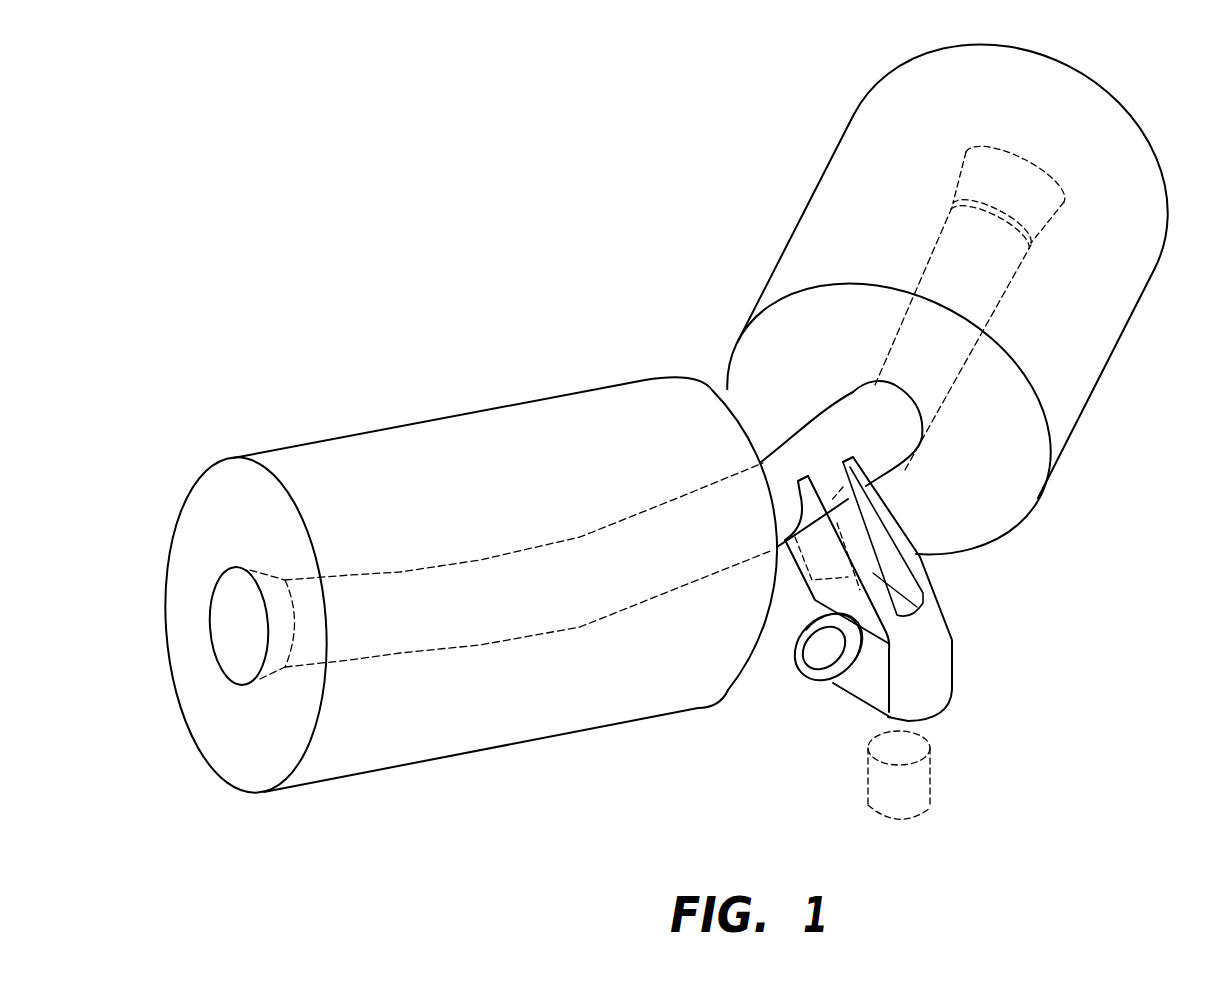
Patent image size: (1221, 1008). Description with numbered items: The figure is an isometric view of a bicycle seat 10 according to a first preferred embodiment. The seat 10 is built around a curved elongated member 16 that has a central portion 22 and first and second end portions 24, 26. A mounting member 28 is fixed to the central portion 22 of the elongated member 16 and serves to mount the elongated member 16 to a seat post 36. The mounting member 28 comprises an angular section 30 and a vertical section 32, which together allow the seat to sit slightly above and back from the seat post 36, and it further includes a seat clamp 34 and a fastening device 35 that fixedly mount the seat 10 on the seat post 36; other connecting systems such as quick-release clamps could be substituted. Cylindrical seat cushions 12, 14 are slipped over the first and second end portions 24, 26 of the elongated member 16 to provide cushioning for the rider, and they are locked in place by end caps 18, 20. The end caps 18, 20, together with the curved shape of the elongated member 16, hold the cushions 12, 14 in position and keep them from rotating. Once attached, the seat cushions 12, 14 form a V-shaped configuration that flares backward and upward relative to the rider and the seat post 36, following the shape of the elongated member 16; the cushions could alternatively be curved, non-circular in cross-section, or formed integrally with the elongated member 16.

The bicycle seat 10 is at (310, 124).
The seat cushion 12 is at (650, 407).
The seat cushion 14 is at (805, 248).
The elongated member 16 is at (568, 597).
The end cap 18 is at (227, 623).
The end cap 20 is at (1035, 177).
The central portion 22 is at (832, 477).
The first end portion 24 is at (367, 633).
The second end portion 26 is at (991, 271).
The mounting member 28 is at (966, 617).
The angular section 30 is at (923, 575).
The vertical section 32 is at (940, 675).
The seat clamp 34 is at (824, 685).
The fastening device 35 is at (813, 647).
The seat post 36 is at (920, 775).